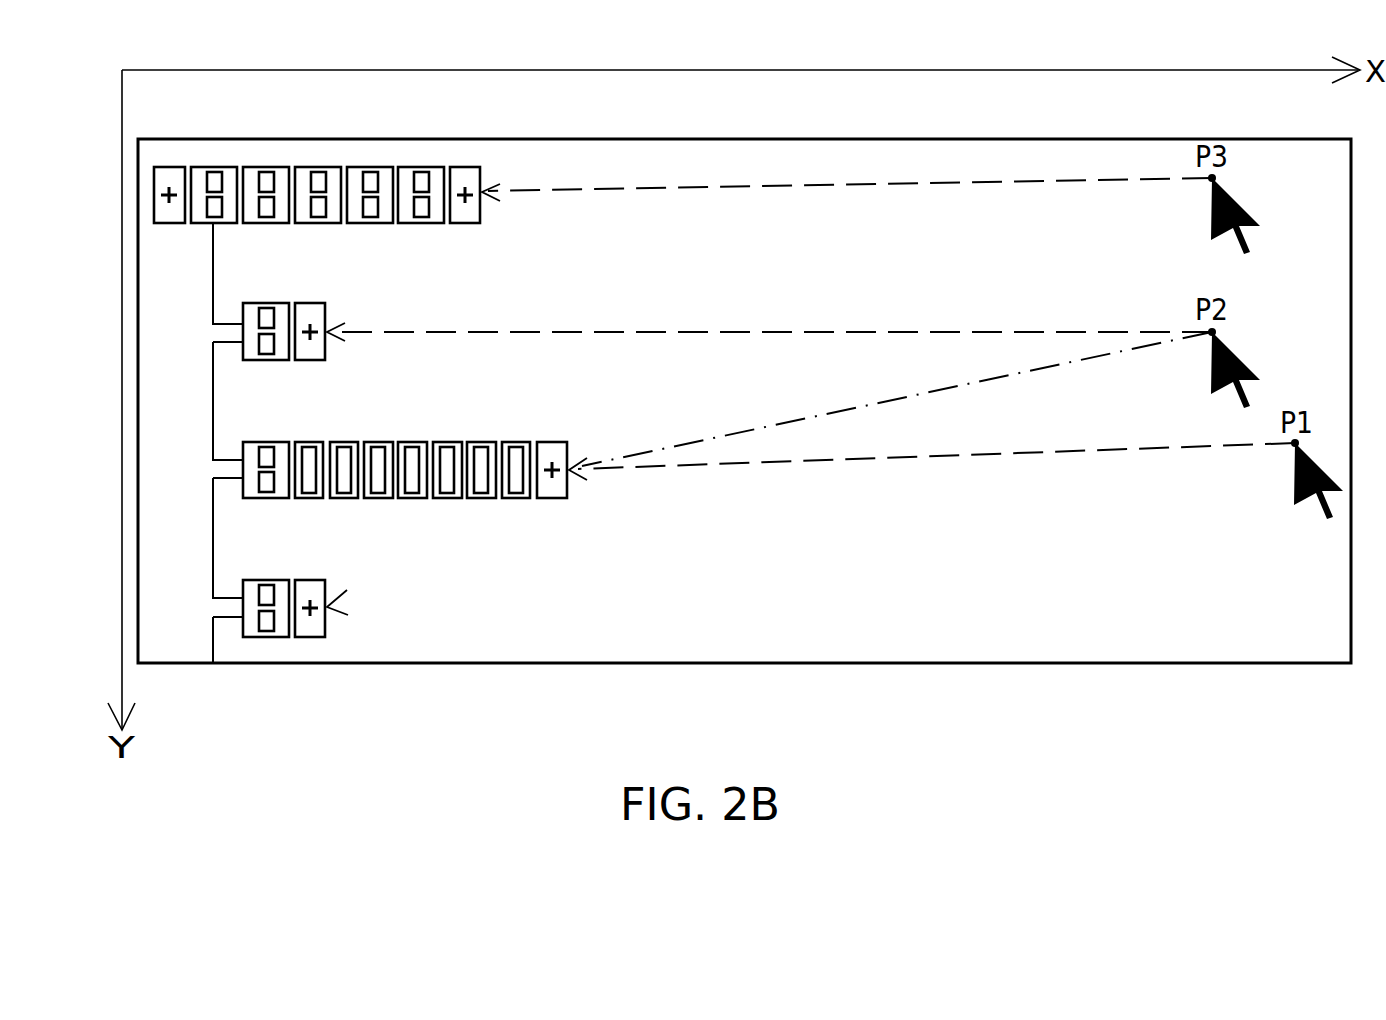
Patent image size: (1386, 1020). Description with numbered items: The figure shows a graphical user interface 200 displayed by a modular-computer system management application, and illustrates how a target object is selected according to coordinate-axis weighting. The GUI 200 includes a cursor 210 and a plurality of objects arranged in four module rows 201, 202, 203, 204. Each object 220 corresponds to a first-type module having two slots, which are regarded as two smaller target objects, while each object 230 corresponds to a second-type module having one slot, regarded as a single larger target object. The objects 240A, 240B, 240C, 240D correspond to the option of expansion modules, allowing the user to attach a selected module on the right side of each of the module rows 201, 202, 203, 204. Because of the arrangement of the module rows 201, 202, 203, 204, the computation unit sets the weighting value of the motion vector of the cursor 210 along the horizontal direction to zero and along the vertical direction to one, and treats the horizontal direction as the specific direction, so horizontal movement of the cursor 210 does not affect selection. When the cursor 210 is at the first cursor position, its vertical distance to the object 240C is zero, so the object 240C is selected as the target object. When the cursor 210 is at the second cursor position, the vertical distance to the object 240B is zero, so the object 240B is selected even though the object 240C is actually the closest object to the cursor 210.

The graphical user interface 200 is at (953, 593).
The module row 201 is at (100, 195).
The module row 202 is at (100, 333).
The module row 203 is at (100, 470).
The module row 204 is at (100, 607).
The cursor 210 is at (1208, 224).
The object 220 is at (276, 167).
The object 230 is at (311, 442).
The object 240A is at (463, 167).
The object 240B is at (312, 303).
The object 240C is at (552, 442).
The object 240D is at (312, 580).